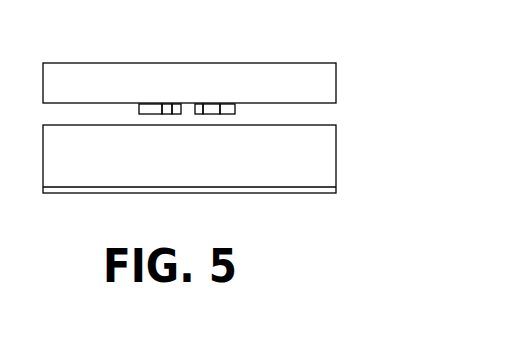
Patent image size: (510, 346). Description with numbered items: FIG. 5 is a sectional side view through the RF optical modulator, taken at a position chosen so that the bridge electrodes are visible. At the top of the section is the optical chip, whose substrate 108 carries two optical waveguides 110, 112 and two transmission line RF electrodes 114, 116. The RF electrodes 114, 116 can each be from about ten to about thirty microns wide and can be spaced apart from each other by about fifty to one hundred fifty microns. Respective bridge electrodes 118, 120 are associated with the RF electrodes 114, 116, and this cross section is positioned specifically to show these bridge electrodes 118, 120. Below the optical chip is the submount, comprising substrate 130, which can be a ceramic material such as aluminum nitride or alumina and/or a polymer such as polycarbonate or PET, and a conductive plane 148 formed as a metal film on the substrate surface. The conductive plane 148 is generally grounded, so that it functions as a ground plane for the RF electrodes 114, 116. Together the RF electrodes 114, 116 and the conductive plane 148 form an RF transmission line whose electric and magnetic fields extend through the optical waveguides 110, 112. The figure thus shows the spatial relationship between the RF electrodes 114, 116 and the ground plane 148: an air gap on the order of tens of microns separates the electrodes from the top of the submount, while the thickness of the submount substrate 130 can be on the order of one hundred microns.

The substrate 108 is at (325, 87).
The optical waveguide 110 is at (181, 110).
The optical waveguide 112 is at (198, 108).
The transmission line RF electrode 114 is at (139, 108).
The transmission line RF electrode 116 is at (237, 110).
The bridge electrode 118 is at (167, 114).
The bridge electrode 120 is at (212, 114).
The substrate 130 is at (330, 142).
The conductive plane 148 is at (271, 193).